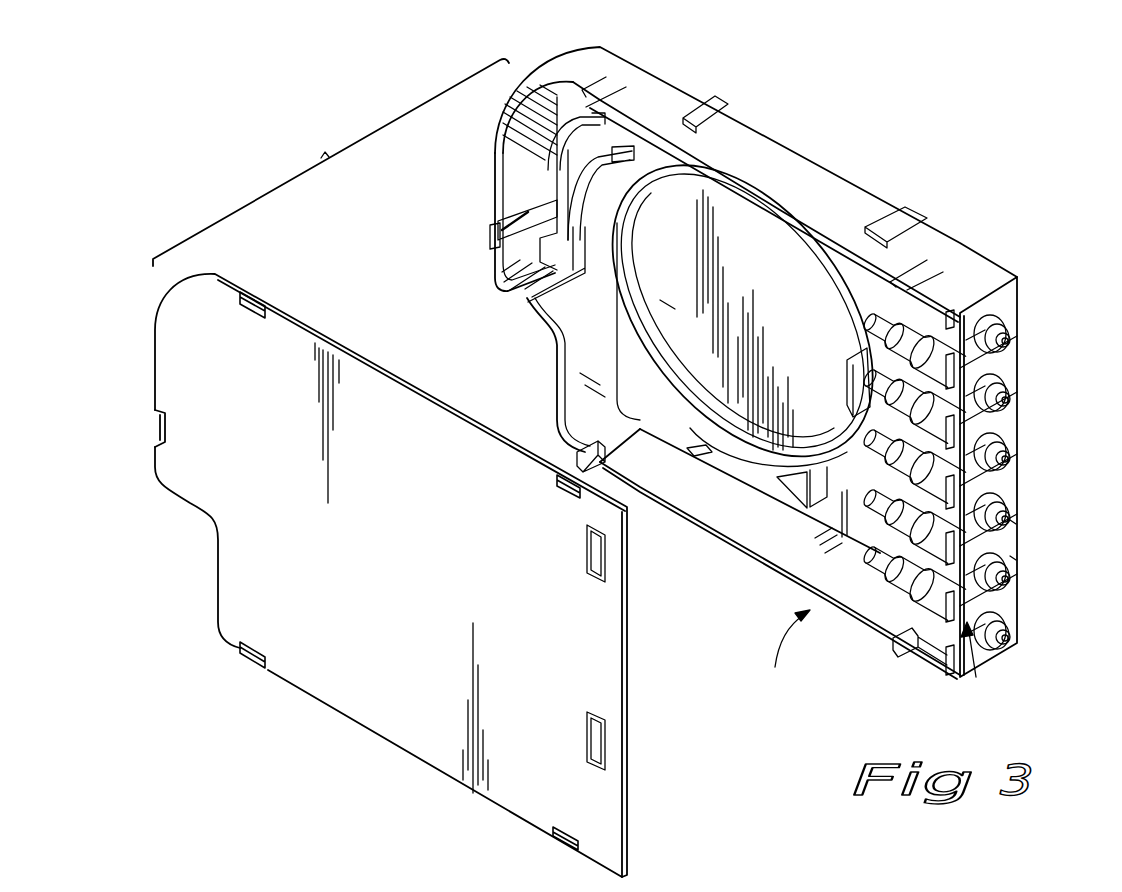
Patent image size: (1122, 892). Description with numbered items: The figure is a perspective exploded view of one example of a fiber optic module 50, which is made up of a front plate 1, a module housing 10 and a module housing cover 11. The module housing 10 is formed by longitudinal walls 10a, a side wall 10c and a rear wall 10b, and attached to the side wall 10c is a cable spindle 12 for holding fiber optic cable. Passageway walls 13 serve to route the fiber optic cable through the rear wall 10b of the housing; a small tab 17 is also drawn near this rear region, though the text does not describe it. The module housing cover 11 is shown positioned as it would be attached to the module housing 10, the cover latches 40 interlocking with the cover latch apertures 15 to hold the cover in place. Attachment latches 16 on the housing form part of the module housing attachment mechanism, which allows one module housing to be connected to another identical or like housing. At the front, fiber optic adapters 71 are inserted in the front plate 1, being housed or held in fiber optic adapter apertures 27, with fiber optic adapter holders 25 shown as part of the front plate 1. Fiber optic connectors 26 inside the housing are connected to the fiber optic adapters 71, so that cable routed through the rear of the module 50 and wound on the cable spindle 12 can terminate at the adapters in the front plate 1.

The front plate 1 is at (1007, 420).
The module housing 10 is at (795, 348).
The longitudinal walls 10a is at (762, 153).
The rear wall 10b is at (510, 187).
The side wall 10c is at (745, 247).
The module housing cover 11 is at (387, 688).
The cable spindle 12 is at (662, 362).
The passageway walls 13 is at (557, 150).
The cover latch apertures 15 is at (258, 296).
The attachment latches 16 is at (708, 100).
The latch tab 17 is at (494, 236).
The fiber optic adapter holders 25 is at (1010, 350).
The fiber optic connectors 26 is at (932, 523).
The fiber optic adapter apertures 27 is at (972, 665).
The cover latches 40 is at (607, 93).
The fiber optic module 50 is at (784, 654).
The fiber optic adapters 71 is at (1018, 554).